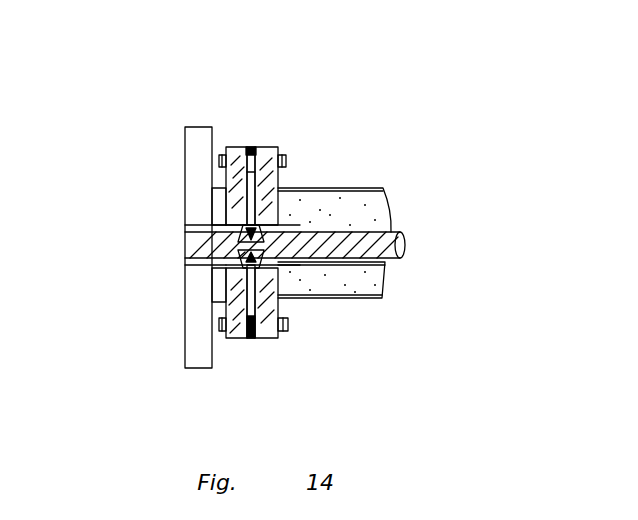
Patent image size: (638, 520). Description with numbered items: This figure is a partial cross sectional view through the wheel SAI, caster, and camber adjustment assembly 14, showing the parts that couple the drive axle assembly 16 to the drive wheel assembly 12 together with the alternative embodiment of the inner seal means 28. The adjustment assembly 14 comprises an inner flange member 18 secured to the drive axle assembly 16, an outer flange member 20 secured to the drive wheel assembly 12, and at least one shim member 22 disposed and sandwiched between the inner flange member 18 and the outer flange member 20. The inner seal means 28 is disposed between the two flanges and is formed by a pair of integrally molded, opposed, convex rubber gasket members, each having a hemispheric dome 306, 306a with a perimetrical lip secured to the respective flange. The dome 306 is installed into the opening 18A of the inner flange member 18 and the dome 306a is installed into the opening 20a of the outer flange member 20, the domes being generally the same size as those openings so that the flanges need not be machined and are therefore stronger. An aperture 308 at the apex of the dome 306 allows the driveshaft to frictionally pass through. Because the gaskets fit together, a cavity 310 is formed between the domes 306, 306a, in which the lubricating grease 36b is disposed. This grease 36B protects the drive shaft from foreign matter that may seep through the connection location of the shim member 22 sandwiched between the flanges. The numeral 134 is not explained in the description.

The drive wheel assembly 12 is at (158, 327).
The wheel SAI, caster, and camber adjustment assembly 14 is at (266, 375).
The drive axle assembly 16 is at (356, 214).
The inner flange member 18 is at (265, 150).
The opening of inner flange 18A is at (340, 169).
The outer flange member 20 is at (198, 132).
The opening of outer flange 20a is at (157, 245).
The shim member 22 is at (251, 147).
The inner seal means 28 is at (262, 262).
The lubricating grease 36b is at (257, 228).
The grease 36B is at (256, 268).
The nut 134 is at (286, 168).
The hemispheric dome 306 is at (262, 261).
The hemispheric dome 306a is at (241, 258).
The aperture 308 is at (242, 230).
The cavity 310 is at (272, 224).